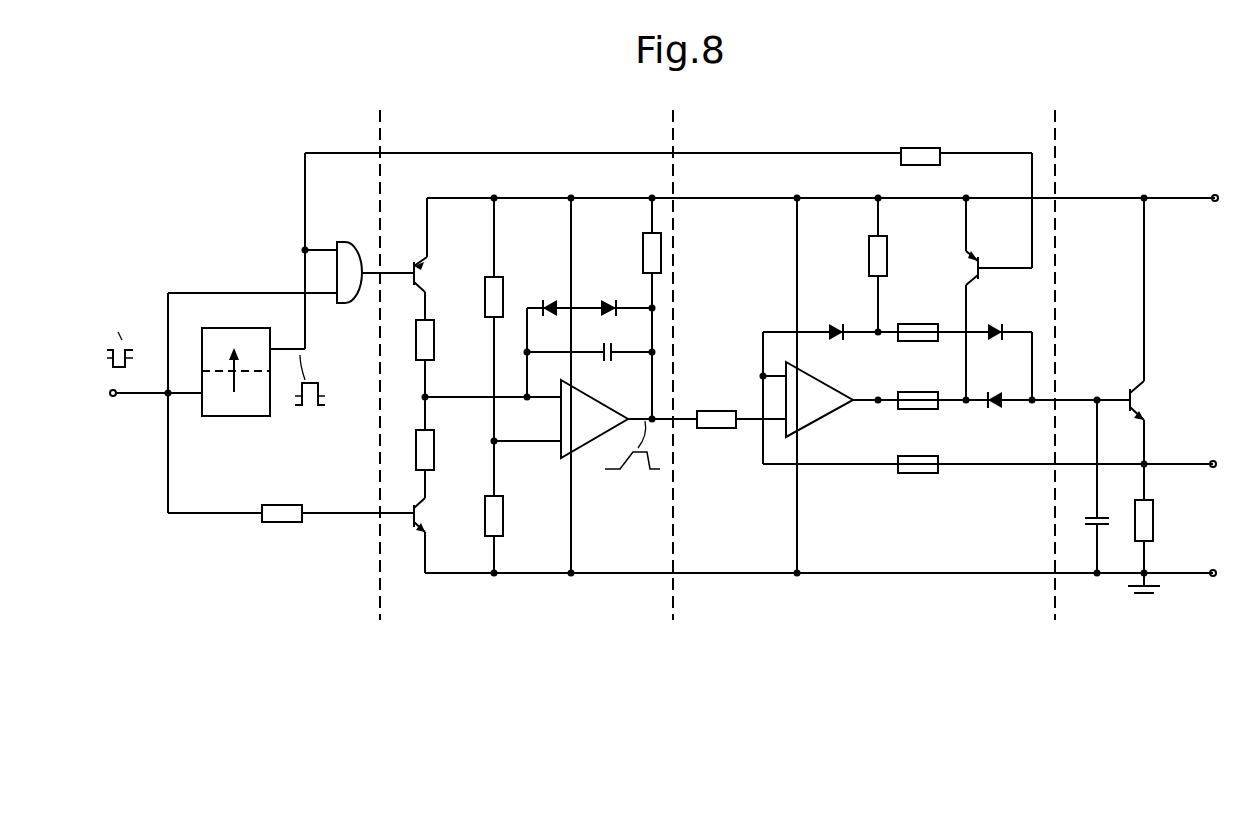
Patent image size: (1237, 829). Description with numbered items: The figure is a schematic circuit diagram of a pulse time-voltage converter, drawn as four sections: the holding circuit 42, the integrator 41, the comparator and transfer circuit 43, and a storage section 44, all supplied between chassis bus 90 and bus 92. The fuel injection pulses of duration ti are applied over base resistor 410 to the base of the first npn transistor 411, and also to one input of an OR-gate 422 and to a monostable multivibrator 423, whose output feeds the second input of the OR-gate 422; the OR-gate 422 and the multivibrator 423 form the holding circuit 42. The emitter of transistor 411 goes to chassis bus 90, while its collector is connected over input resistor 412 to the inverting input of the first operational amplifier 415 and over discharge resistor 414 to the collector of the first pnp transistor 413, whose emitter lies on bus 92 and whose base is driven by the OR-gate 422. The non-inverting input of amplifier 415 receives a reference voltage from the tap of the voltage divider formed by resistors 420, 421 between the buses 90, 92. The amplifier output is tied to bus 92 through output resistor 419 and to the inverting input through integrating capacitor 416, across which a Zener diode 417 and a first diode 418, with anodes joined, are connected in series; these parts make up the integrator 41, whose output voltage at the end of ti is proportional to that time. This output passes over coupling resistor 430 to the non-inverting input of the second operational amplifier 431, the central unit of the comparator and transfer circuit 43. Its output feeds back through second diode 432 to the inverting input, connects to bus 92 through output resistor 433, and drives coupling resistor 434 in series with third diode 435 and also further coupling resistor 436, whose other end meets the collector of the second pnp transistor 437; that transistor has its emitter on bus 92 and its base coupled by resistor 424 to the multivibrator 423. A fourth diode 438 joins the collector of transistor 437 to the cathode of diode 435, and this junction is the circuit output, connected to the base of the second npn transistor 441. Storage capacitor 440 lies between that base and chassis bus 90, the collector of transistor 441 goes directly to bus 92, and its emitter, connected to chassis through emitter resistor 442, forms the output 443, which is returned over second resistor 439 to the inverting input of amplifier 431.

The integrator 41 is at (814, 429).
The holding circuit 42 is at (504, 407).
The comparator and transfer circuit 43 is at (955, 406).
The storage 44 is at (1139, 422).
The chassis bus 90 is at (957, 573).
The bus 92 is at (1086, 197).
The base resistor 410 is at (282, 506).
The first npn transistor 411 is at (422, 510).
The input resistor 412 is at (434, 446).
The first pnp transistor 413 is at (425, 264).
The discharge resistor 414 is at (434, 340).
The first operational amplifier 415 is at (561, 419).
The integrating capacitor 416 is at (610, 362).
The Zener diode 417 is at (548, 302).
The first diode 418 is at (609, 302).
The output resistor 419 is at (643, 241).
The voltage divider resistor 420 is at (486, 296).
The voltage divider resistor 421 is at (503, 513).
The OR-gate 422 is at (348, 304).
The monostable multivibrator 423 is at (247, 413).
The coupling resistor 424 is at (914, 152).
The coupling resistor 430 is at (716, 411).
The second operational amplifier 431 is at (825, 410).
The second diode 432 is at (836, 323).
The output resistor 433 is at (869, 251).
The coupling resistor 434 is at (918, 324).
The third diode 435 is at (996, 328).
The further coupling resistor 436 is at (917, 410).
The second pnp transistor 437 is at (977, 263).
The fourth diode 438 is at (997, 410).
The second resistor 439 is at (908, 474).
The storage capacitor 440 is at (1085, 521).
The second npn transistor 441 is at (1146, 403).
The emitter resistor 442 is at (1153, 518).
The output 443 is at (1212, 463).